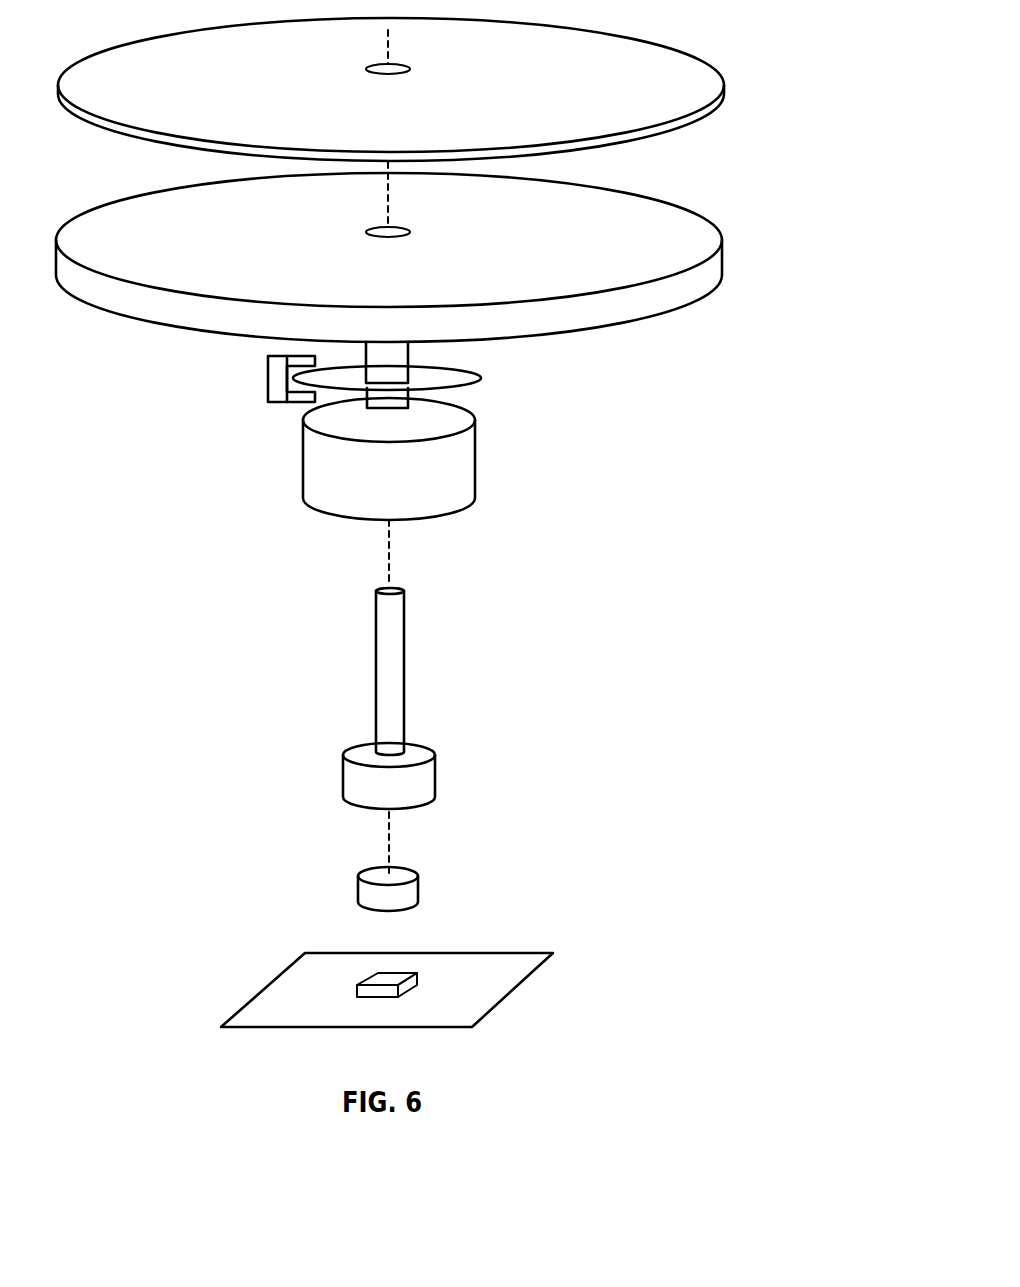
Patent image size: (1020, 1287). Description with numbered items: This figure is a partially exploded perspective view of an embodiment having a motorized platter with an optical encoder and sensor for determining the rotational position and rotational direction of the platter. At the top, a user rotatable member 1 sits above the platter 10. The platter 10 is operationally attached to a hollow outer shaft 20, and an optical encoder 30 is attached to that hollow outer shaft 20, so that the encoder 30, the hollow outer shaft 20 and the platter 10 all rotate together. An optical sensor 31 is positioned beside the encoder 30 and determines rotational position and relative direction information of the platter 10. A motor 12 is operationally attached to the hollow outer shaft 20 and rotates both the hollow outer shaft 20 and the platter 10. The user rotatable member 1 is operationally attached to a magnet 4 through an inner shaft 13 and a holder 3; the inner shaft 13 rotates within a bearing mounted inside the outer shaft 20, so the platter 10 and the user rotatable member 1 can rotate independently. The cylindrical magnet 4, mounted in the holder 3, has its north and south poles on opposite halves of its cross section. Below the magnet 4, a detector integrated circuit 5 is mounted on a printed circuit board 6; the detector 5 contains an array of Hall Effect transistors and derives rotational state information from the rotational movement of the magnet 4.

The user rotatable member 1 is at (685, 76).
The platter 10 is at (673, 230).
The hollow outer shaft 20 is at (408, 345).
The optical encoder 30 is at (470, 387).
The optical sensor 31 is at (287, 378).
The motor 12 is at (457, 470).
The inner shaft 13 is at (402, 677).
The holder 3 is at (425, 783).
The magnet 4 is at (410, 890).
The detector integrated circuit 5 is at (415, 981).
The printed circuit board 6 is at (545, 960).